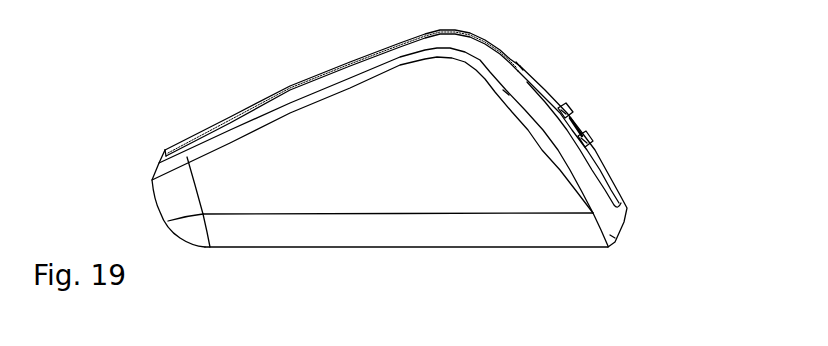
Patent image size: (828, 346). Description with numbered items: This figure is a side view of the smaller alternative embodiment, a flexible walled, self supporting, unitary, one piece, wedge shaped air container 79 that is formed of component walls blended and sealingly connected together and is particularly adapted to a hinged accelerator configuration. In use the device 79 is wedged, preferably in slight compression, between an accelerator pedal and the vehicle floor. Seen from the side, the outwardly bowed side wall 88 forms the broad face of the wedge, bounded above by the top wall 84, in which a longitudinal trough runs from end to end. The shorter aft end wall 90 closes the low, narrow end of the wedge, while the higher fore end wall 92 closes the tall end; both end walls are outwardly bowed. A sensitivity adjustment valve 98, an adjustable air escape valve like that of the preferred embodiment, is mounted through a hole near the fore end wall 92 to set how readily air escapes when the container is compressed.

The air container 79 is at (600, 48).
The top wall 84 is at (285, 88).
The side wall 88 is at (283, 163).
The aft end wall 90 is at (160, 207).
The fore end wall 92 is at (605, 165).
The sensitivity adjustment valve 98 is at (573, 112).